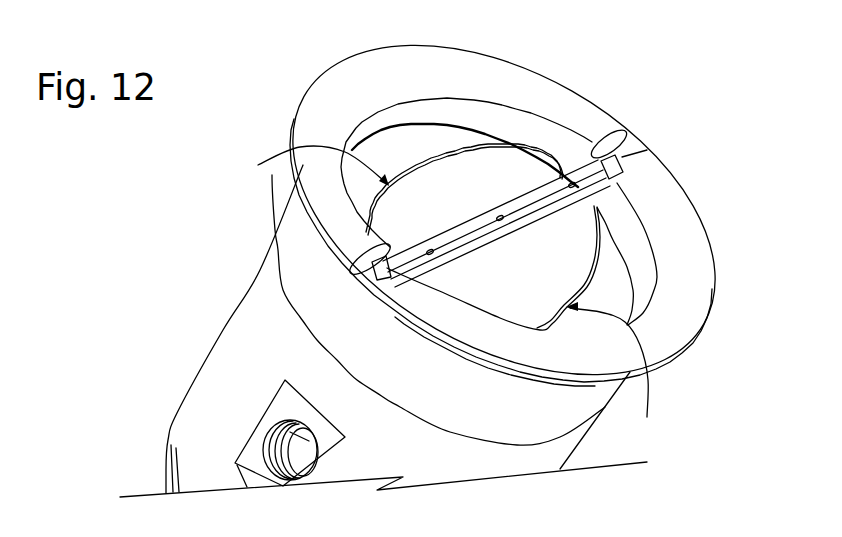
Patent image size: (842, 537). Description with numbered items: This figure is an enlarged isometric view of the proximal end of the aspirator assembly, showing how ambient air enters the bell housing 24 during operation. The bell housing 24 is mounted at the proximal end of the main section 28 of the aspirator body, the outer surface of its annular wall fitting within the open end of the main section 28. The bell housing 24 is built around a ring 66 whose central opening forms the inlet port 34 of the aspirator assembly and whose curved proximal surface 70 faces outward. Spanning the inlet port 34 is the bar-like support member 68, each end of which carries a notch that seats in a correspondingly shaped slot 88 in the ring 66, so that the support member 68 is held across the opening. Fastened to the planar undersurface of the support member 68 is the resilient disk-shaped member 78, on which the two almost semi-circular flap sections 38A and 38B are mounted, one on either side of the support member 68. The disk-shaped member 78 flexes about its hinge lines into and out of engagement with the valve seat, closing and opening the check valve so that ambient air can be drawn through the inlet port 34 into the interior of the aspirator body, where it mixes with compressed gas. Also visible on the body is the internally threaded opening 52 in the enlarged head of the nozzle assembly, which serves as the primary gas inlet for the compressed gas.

The bell housing 24 is at (526, 90).
The main section 28 is at (247, 357).
The inlet port 34 is at (620, 286).
The flap section 38A is at (493, 183).
The flap section 38B is at (557, 258).
The internally threaded opening 52 is at (267, 437).
The ring 66 is at (583, 120).
The support member 68 is at (543, 211).
The curved proximal surface 70 is at (400, 85).
The disk-shaped member 78 is at (433, 158).
The slot 88 is at (620, 155).